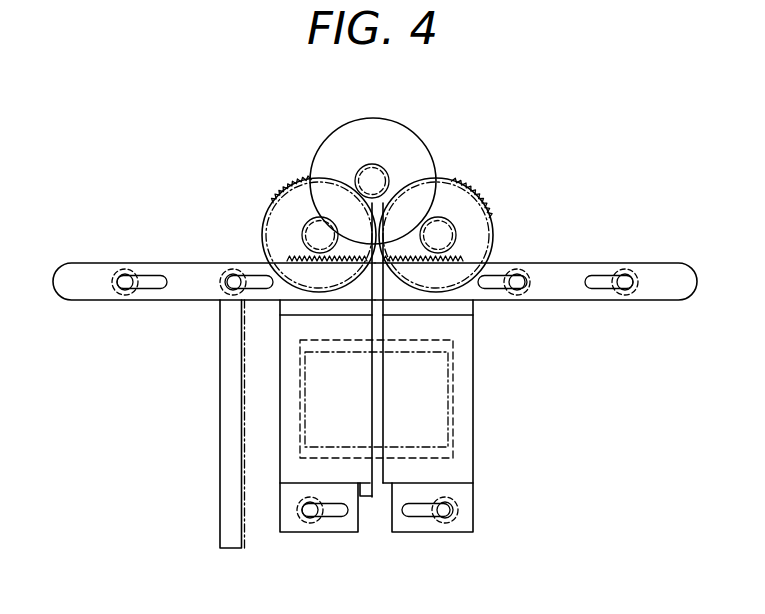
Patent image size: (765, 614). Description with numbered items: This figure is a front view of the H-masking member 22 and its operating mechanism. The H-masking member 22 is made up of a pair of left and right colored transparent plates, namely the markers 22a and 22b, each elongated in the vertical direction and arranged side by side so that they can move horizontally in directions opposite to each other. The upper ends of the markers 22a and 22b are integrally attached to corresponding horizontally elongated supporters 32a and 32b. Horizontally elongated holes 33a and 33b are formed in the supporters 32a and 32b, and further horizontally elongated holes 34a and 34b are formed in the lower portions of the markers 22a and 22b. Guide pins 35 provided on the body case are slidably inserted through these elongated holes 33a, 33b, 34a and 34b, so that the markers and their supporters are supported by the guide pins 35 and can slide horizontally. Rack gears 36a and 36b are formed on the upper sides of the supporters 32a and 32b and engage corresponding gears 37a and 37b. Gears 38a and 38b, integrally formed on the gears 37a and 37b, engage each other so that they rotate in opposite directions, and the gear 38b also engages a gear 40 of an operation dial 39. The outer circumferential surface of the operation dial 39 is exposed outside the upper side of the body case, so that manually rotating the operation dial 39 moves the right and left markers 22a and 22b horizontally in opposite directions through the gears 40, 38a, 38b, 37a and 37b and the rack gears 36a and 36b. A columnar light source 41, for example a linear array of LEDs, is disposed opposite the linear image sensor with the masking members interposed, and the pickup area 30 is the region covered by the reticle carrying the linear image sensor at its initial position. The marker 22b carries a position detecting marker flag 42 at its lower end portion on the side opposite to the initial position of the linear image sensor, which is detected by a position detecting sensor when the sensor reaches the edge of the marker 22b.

The H-masking member 22 is at (473, 352).
The marker 22a is at (468, 382).
The marker 22b is at (287, 413).
The pickup area 30 is at (418, 447).
The supporter 32a is at (678, 275).
The supporter 32b is at (66, 270).
The horizontally elongated hole 33a is at (603, 277).
The horizontally elongated hole 33b is at (150, 276).
The horizontally elongated hole 34a is at (428, 518).
The horizontally elongated hole 34b is at (333, 518).
The guide pin 35 is at (126, 276).
The rack gear 36a is at (455, 247).
The rack gear 36b is at (304, 243).
The gear 37a is at (445, 221).
The gear 37b is at (320, 217).
The gear 38a is at (463, 184).
The gear 38b is at (292, 184).
The operation dial 39 is at (375, 118).
The gear 40 is at (383, 166).
The columnar light source 41 is at (218, 380).
The position detecting marker flag 42 is at (366, 497).